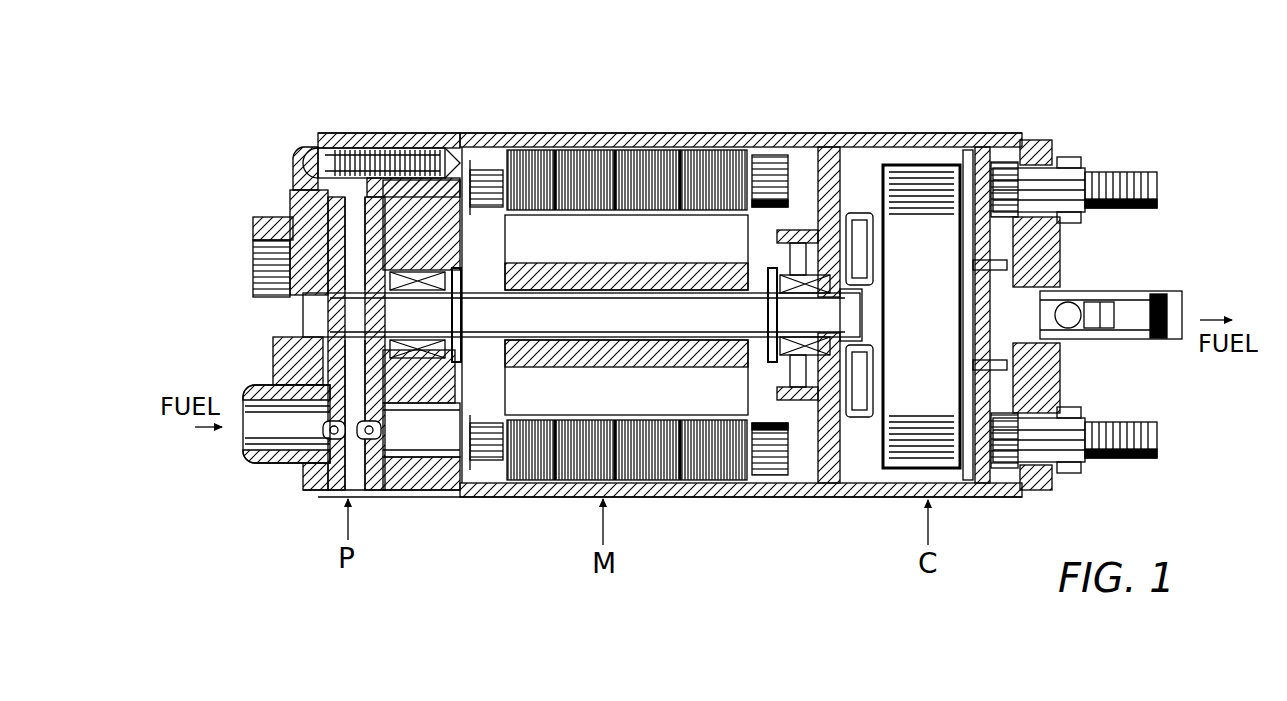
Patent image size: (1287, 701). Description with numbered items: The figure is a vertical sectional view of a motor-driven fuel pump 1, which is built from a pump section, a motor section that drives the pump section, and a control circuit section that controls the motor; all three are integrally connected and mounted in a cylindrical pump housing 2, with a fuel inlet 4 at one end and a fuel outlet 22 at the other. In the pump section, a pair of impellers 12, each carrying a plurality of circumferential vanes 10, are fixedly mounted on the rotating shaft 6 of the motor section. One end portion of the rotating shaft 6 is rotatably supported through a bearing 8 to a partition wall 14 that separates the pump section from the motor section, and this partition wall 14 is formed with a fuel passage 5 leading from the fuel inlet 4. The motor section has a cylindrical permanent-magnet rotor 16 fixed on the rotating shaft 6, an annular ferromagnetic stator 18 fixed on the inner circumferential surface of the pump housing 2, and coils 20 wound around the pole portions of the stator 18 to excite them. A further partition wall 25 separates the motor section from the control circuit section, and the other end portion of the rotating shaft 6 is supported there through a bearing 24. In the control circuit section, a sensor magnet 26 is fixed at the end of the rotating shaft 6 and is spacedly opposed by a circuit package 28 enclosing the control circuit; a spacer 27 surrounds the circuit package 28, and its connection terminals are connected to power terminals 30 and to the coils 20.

The motor-driven fuel pump 1 is at (443, 118).
The pump housing 2 is at (675, 130).
The fuel inlet 4 is at (243, 440).
The fuel passage 5 is at (400, 462).
The rotating shaft 6 is at (305, 322).
The bearing 8 is at (403, 131).
The circumferential vanes 10 is at (352, 424).
The impellers 12 is at (300, 205).
The partition wall 14 is at (489, 490).
The rotor 16 is at (538, 130).
The stator 18 is at (778, 130).
The coils 20 is at (599, 130).
The fuel outlet 22 is at (1190, 303).
The bearing 24 is at (806, 232).
The partition wall 25 is at (832, 148).
The sensor magnet 26 is at (858, 218).
The spacer 27 is at (945, 200).
The circuit package 28 is at (978, 175).
The power terminals 30 is at (1160, 190).